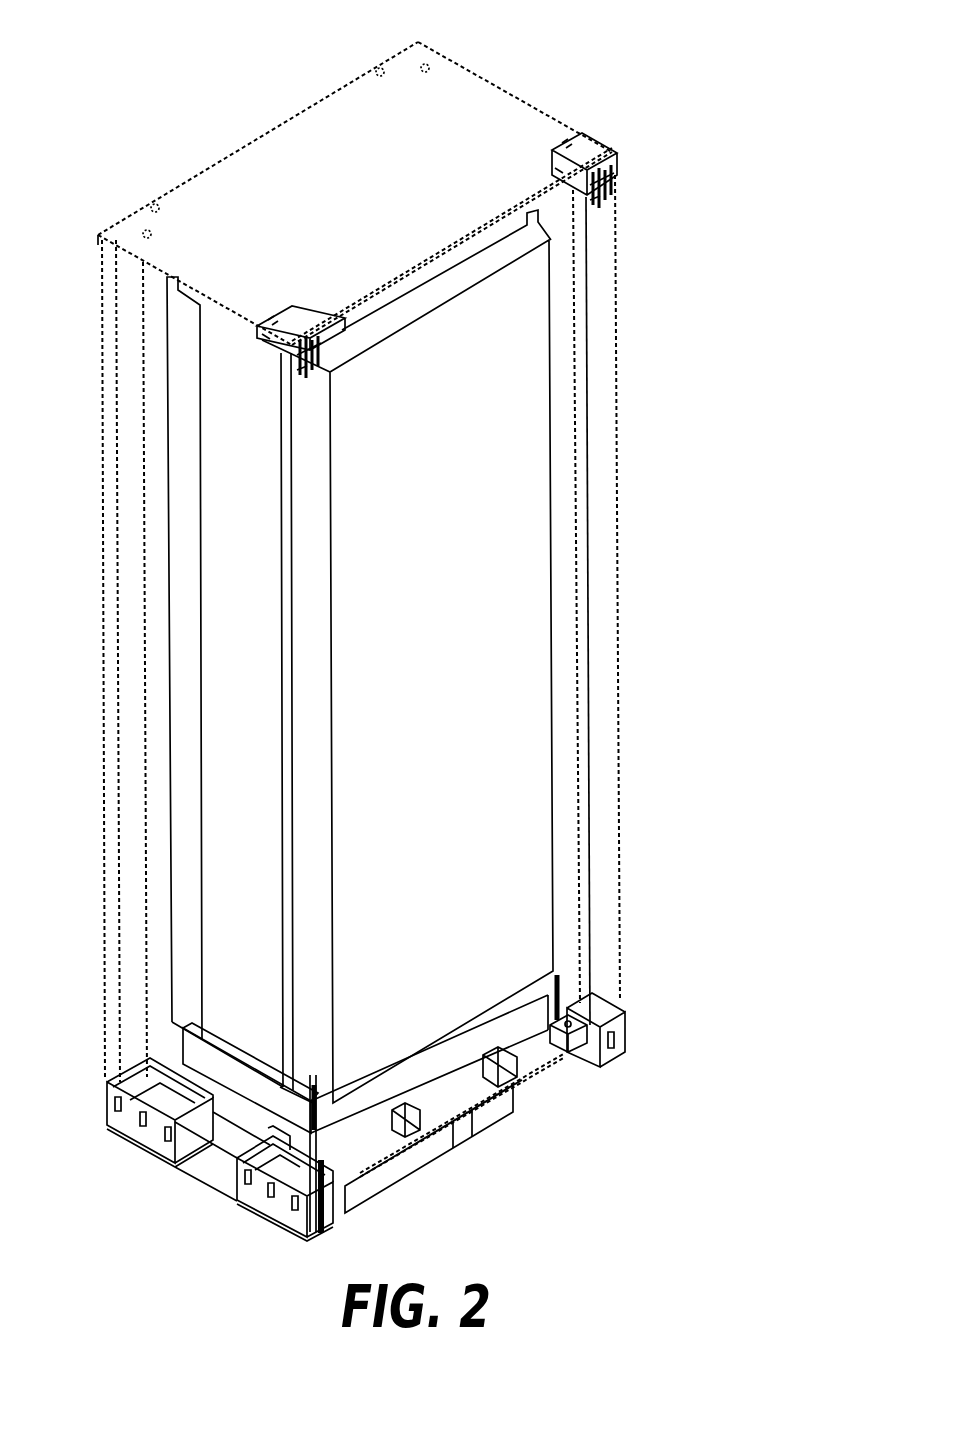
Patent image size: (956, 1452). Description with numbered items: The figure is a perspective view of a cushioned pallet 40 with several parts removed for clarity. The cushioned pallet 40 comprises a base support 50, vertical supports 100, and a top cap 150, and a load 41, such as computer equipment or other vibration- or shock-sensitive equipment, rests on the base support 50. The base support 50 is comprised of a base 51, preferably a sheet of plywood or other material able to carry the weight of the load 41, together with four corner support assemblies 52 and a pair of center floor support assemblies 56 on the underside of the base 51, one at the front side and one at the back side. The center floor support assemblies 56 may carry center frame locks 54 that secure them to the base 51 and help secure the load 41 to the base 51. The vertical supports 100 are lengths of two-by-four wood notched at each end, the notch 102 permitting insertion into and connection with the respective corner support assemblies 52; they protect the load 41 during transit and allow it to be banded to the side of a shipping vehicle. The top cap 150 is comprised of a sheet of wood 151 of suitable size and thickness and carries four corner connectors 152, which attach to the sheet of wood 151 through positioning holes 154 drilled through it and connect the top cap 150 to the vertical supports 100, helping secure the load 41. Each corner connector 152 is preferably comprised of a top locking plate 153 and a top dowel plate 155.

The top cap 150 is at (361, 172).
The sheet of wood 151 is at (533, 100).
The corner connector 152 is at (631, 144).
The top locking plate 153 is at (331, 340).
The positioning holes 154 is at (432, 60).
The top dowel plate 155 is at (342, 323).
The notch 102 is at (616, 172).
The vertical supports 100 is at (636, 325).
The cushioned pallet 40 is at (446, 671).
The load 41 is at (556, 600).
The base support 50 is at (413, 1104).
The base 51 is at (541, 1075).
The corner support assemblies 52 is at (642, 1008).
The center frame locks 54 is at (388, 1148).
The center floor support assemblies 56 is at (466, 1154).